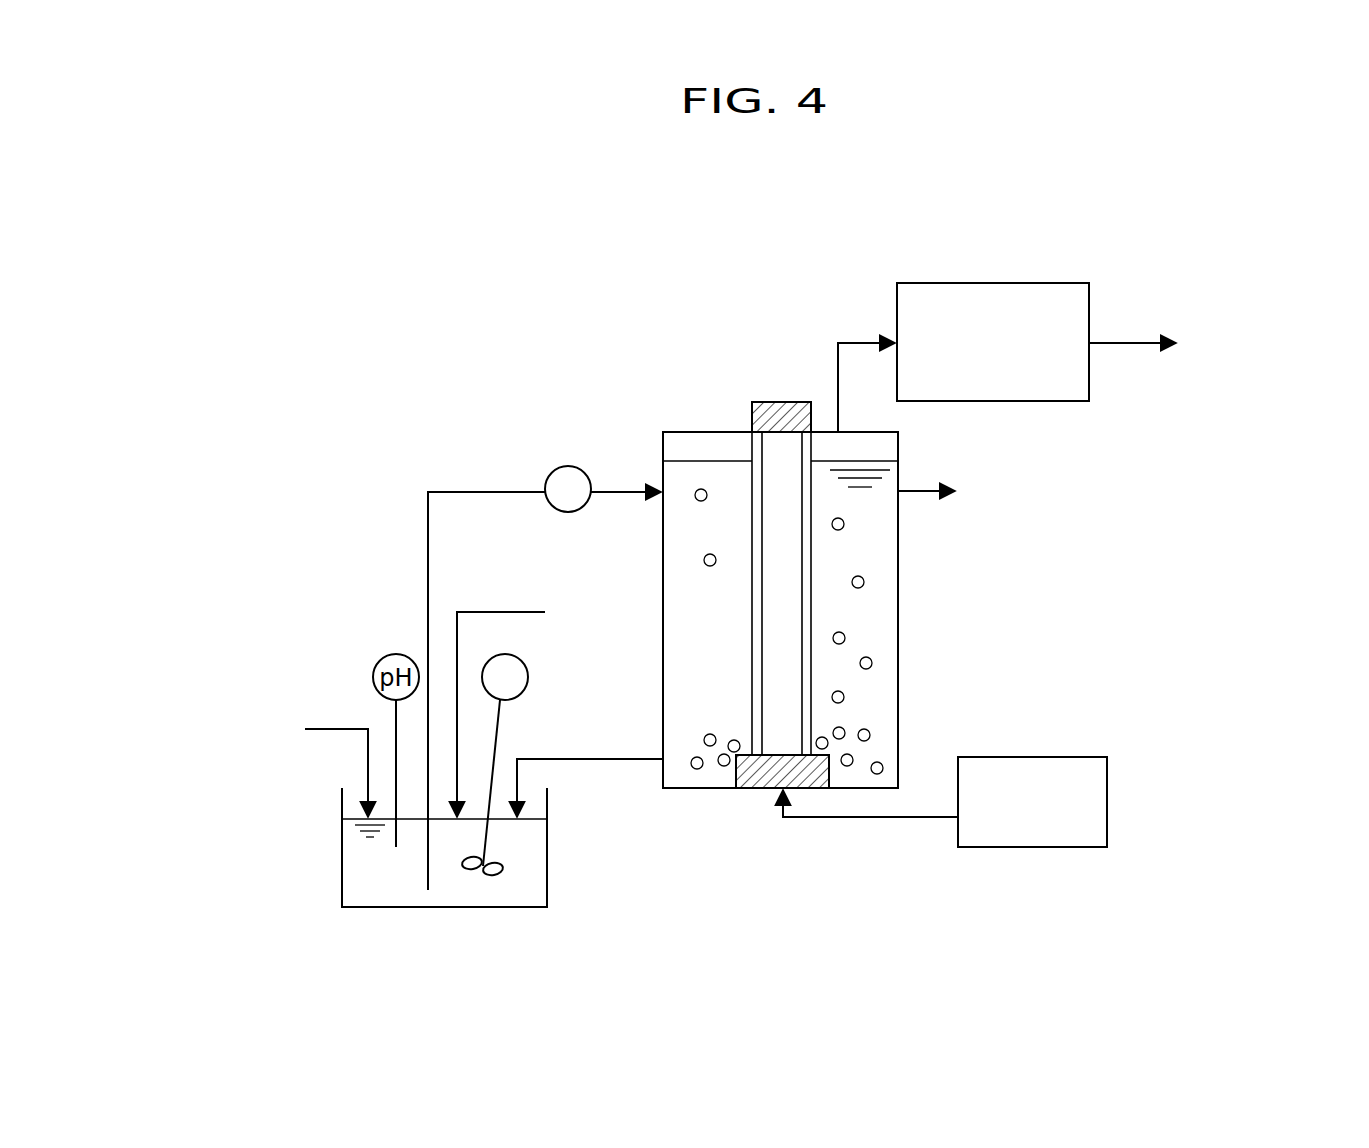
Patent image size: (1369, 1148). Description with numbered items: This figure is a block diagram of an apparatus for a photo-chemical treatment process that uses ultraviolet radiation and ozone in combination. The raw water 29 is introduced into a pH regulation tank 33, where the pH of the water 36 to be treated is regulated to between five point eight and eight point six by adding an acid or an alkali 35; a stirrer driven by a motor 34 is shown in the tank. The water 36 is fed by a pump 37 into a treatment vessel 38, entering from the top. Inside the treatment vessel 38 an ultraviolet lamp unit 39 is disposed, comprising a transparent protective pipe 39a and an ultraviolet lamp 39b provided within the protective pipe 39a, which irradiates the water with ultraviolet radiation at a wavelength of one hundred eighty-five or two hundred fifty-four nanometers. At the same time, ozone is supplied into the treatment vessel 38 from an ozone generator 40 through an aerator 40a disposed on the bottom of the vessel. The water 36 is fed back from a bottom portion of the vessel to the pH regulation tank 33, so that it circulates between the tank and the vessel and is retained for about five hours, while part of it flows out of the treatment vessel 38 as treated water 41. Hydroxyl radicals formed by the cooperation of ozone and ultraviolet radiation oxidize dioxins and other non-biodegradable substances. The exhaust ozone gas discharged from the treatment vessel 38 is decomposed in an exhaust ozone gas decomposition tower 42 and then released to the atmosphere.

The raw water 29 is at (330, 729).
The pH regulation tank 33 is at (547, 887).
The stirrer motor 34 is at (528, 672).
The acid or alkali 35 is at (492, 612).
The water to be treated 36 is at (384, 889).
The pump 37 is at (568, 466).
The treatment vessel 38 is at (700, 788).
The ultraviolet lamp unit 39 is at (742, 400).
The transparent protective pipe 39a is at (810, 545).
The ultraviolet lamp 39b is at (775, 673).
The ozone generator 40 is at (1063, 757).
The aerator 40a is at (758, 788).
The treated water 41 is at (913, 486).
The exhaust ozone gas decomposition tower 42 is at (1089, 385).